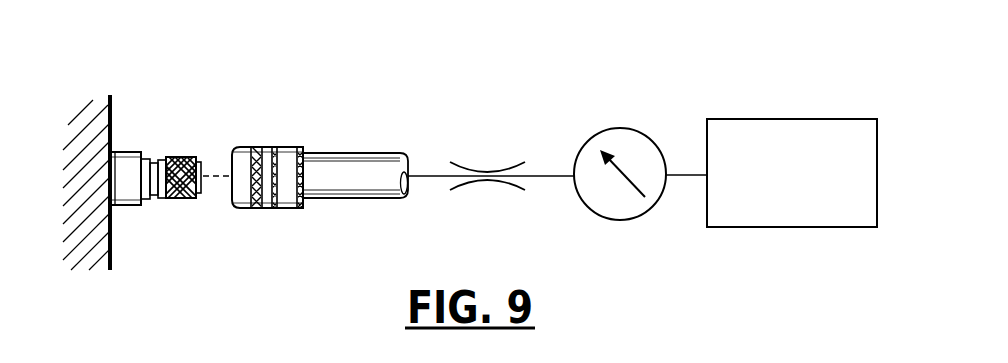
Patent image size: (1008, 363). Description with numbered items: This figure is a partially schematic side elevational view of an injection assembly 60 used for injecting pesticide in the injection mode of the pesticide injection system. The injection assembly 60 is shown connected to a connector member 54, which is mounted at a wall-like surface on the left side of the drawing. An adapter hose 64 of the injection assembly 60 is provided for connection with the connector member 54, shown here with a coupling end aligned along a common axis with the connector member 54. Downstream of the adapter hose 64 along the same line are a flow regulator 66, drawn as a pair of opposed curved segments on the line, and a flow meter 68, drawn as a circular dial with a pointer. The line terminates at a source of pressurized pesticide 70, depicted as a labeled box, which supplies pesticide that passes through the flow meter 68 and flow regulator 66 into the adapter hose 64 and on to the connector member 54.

The connector member 54 is at (178, 157).
The injection assembly 60 is at (508, 73).
The adapter hose 64 is at (242, 146).
The flow regulator 66 is at (507, 167).
The flow meter 68 is at (620, 128).
The source of pressurized pesticide 70 is at (786, 119).